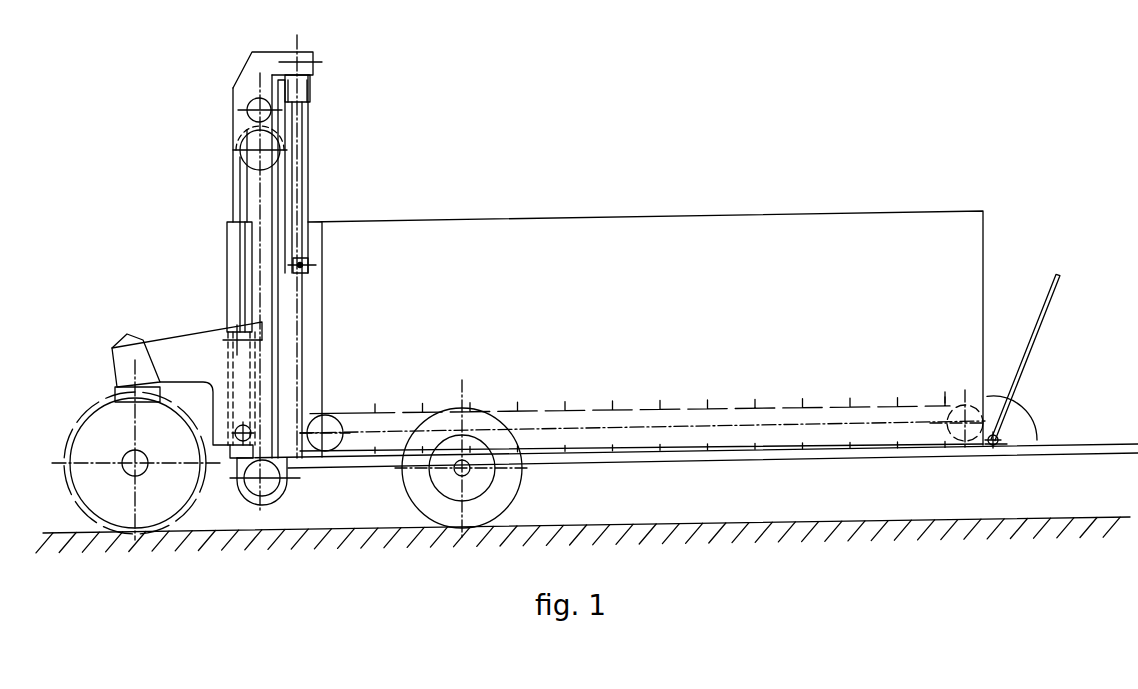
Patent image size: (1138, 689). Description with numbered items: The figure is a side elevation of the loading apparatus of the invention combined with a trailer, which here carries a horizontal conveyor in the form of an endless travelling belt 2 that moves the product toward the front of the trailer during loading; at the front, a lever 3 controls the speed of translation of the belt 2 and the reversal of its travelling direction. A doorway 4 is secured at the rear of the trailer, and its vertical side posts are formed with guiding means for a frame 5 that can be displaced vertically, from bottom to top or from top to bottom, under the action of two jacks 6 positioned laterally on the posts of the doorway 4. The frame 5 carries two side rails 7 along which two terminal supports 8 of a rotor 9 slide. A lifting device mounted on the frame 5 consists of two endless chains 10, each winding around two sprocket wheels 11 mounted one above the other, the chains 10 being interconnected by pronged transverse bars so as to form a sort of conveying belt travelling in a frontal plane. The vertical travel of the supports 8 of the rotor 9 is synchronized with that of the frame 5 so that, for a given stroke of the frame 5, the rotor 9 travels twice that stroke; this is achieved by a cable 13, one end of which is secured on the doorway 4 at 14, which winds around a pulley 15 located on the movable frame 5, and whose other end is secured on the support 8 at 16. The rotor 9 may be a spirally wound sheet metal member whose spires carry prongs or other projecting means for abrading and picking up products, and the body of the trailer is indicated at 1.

The body / container 1 is at (550, 232).
The endless travelling belt 2 is at (533, 410).
The lever 3 is at (1035, 342).
The doorway 4 is at (283, 182).
The frame 5 is at (263, 67).
The jacks 6 is at (303, 138).
The side rails 7 is at (235, 253).
The terminal supports 8 is at (186, 347).
The rotor 9 is at (107, 427).
The endless chains 10 is at (240, 165).
The sprocket wheels 11 is at (248, 142).
The cable 13 is at (247, 183).
The cable securing point on doorway 14 is at (280, 122).
The pulley 15 is at (252, 100).
The cable securing point on support 16 is at (233, 330).